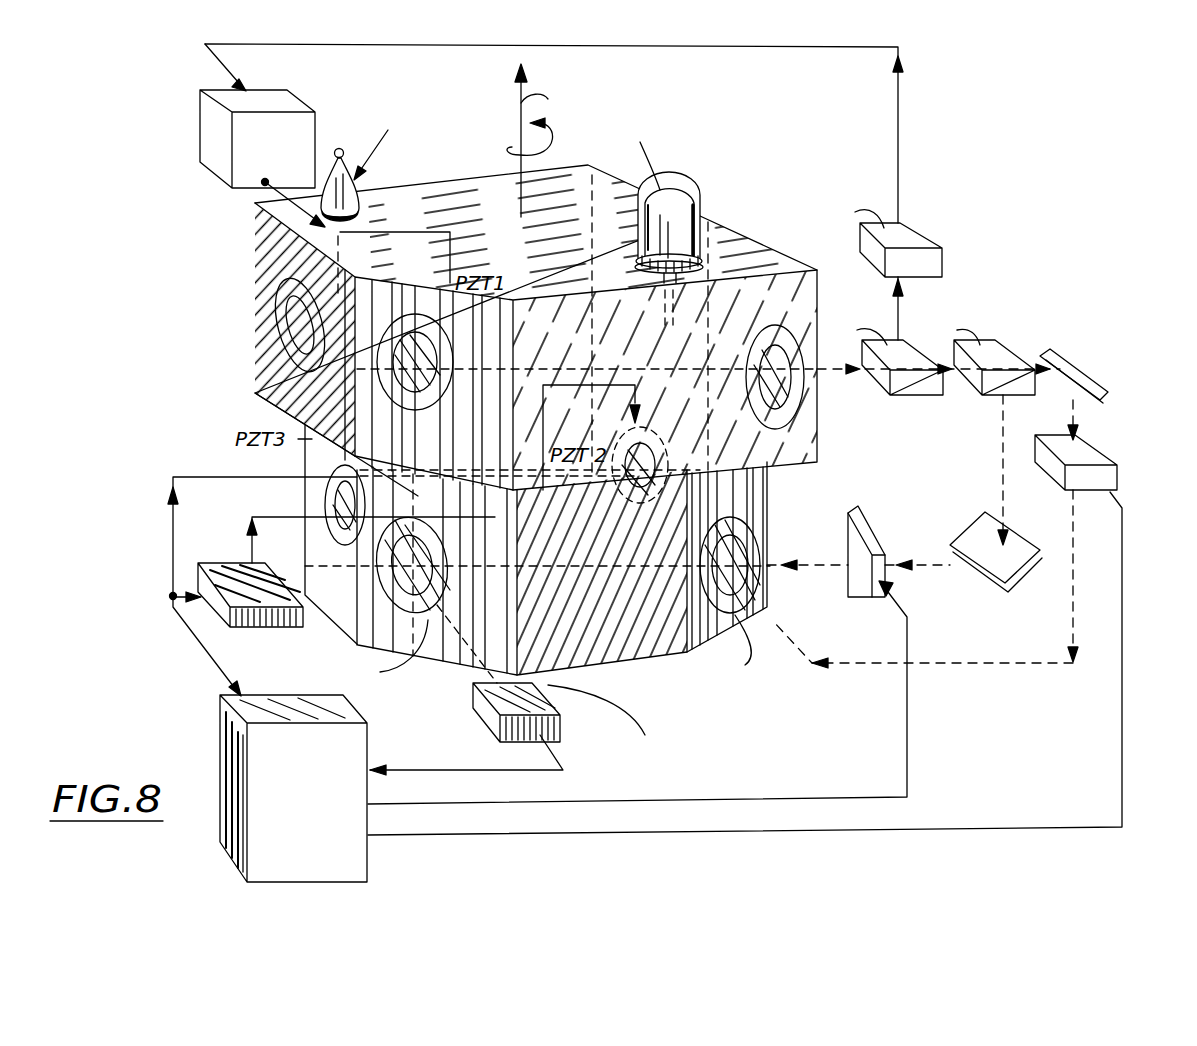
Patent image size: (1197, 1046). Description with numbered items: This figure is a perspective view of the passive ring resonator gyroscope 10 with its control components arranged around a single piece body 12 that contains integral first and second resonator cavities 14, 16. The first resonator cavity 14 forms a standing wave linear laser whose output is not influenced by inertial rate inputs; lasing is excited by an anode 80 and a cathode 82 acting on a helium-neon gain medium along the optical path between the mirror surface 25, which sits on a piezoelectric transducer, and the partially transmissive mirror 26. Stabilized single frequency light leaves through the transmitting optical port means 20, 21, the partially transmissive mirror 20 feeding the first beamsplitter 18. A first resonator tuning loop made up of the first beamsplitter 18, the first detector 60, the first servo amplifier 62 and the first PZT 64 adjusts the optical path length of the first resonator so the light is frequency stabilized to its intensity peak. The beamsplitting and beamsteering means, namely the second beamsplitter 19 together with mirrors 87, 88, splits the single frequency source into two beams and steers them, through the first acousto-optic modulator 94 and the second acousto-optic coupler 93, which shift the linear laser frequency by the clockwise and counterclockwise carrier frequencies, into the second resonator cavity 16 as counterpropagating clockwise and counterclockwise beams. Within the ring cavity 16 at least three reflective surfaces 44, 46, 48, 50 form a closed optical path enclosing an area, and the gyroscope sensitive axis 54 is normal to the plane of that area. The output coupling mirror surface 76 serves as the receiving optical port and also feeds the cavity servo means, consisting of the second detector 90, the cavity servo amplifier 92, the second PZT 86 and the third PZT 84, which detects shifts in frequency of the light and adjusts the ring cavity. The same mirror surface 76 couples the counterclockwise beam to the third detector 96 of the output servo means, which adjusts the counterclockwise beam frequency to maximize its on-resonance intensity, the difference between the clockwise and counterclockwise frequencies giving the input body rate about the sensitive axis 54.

The ring laser gyroscope 10 is at (740, 133).
The single piece body 12 is at (541, 201).
The first resonator cavity 14 is at (369, 284).
The second resonator cavity 16 is at (563, 577).
The beamsplitter BS1 18 is at (918, 395).
The beam splitter BS2 19 is at (995, 395).
The partially transmissive mirror 20 is at (788, 395).
The transmitting optical port means 21 is at (292, 305).
The mirror surface 25 is at (445, 345).
The partially transmissive mirror 26 is at (782, 340).
The reflective surface 44 is at (420, 482).
The reflective surface 46 is at (438, 530).
The reflective surface 48 is at (620, 472).
The reflective surface 50 is at (680, 577).
The sensitive axis 54 is at (538, 140).
The detector 1 60 is at (908, 240).
The first servo amplifier 62 is at (274, 110).
The PZT 1 64 is at (408, 386).
The output coupling mirror surface 76 is at (418, 613).
The anode 80 is at (348, 162).
The cathode 82 is at (640, 264).
The PZT 3 84 is at (330, 490).
The PZT 2 86 is at (650, 505).
The mirror 87 is at (1072, 362).
The mirror 88 is at (1025, 580).
The detector 2 90 is at (238, 565).
The cavity servo amplifier 92 is at (345, 697).
The second acousto-optic coupler AO2 93 is at (1098, 480).
The first acousto-optic modulator AO1 94 is at (862, 548).
The detector 3 96 is at (492, 740).